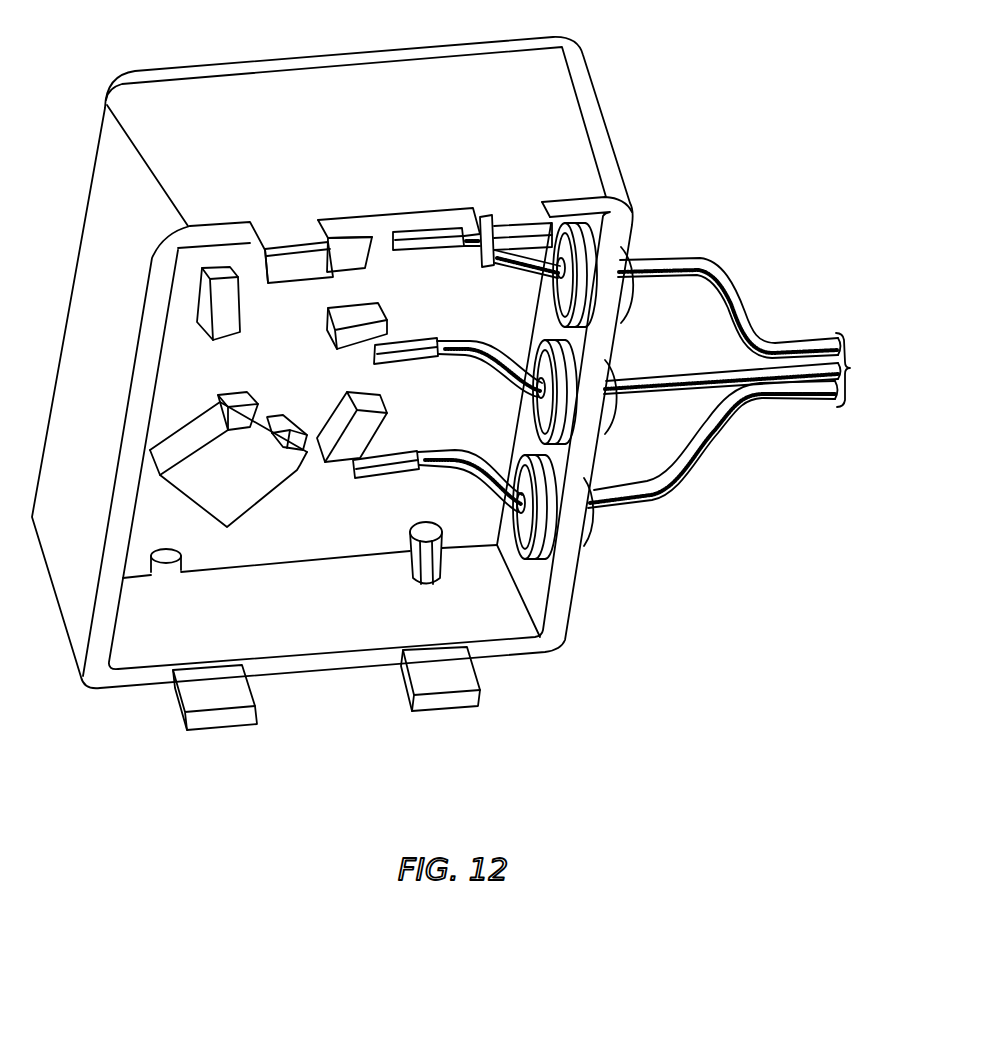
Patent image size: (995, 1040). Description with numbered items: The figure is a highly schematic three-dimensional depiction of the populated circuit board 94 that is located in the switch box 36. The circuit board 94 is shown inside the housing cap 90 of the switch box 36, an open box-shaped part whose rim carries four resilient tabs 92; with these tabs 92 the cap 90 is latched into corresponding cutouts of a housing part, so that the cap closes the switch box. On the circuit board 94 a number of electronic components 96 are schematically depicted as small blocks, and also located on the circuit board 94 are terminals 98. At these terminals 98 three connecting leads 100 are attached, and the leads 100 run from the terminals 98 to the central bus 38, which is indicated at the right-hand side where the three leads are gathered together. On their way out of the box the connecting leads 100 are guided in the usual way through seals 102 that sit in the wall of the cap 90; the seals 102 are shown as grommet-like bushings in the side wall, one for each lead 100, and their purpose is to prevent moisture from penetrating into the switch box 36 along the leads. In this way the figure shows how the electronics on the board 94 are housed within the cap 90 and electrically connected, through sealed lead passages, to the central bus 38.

The switch box 36 is at (454, 409).
The central bus 38 is at (867, 368).
The housing cap 90 is at (90, 678).
The resilient tabs 92 is at (300, 276).
The circuit board 94 is at (308, 548).
The electronic components 96 is at (220, 335).
The terminals 98 is at (409, 244).
The connecting leads 100 is at (738, 308).
The seals 102 is at (630, 315).